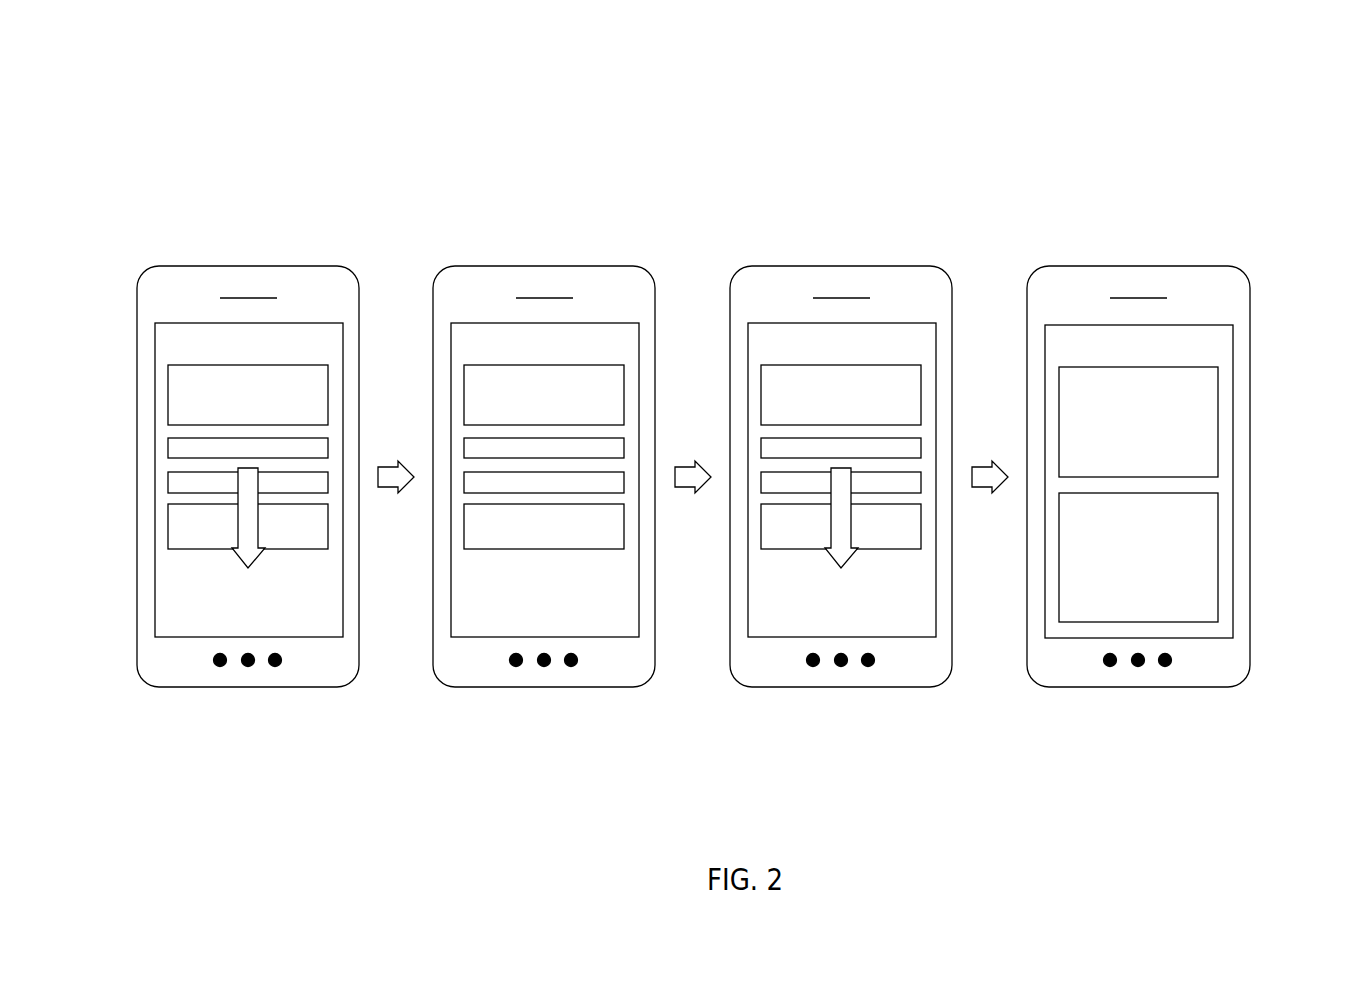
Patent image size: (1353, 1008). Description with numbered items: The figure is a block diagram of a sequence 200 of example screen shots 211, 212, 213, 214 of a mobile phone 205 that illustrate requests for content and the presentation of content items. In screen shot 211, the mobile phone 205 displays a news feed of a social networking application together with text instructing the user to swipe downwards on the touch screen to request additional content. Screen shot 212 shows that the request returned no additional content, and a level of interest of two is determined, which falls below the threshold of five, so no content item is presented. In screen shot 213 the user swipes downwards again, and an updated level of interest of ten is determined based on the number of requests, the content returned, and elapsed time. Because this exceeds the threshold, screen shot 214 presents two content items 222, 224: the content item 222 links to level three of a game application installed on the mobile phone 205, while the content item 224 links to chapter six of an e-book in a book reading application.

The sequence 200 is at (245, 83).
The mobile phone 205 is at (267, 265).
The screen shot 211 is at (210, 347).
The screen shot 212 is at (505, 347).
The screen shot 213 is at (797, 347).
The screen shot 214 is at (1153, 436).
The content item 222 is at (1218, 420).
The content item 224 is at (1218, 558).